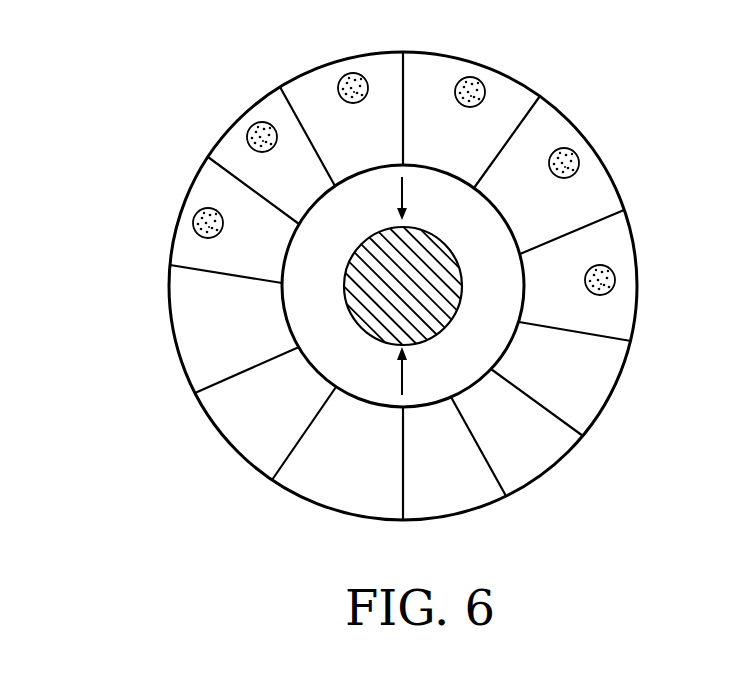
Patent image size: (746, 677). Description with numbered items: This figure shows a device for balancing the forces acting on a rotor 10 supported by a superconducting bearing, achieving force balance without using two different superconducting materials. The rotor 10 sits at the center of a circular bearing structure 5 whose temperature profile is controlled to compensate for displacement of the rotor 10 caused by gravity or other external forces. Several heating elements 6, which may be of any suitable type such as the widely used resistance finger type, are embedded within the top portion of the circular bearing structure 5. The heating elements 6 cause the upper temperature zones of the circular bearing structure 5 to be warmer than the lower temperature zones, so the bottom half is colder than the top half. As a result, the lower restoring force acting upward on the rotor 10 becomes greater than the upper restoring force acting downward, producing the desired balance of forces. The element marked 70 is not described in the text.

The circular bearing structure 5 is at (133, 192).
The heating elements 6 is at (248, 132).
The rotor 10 is at (459, 272).
The hub bore 70 is at (356, 287).